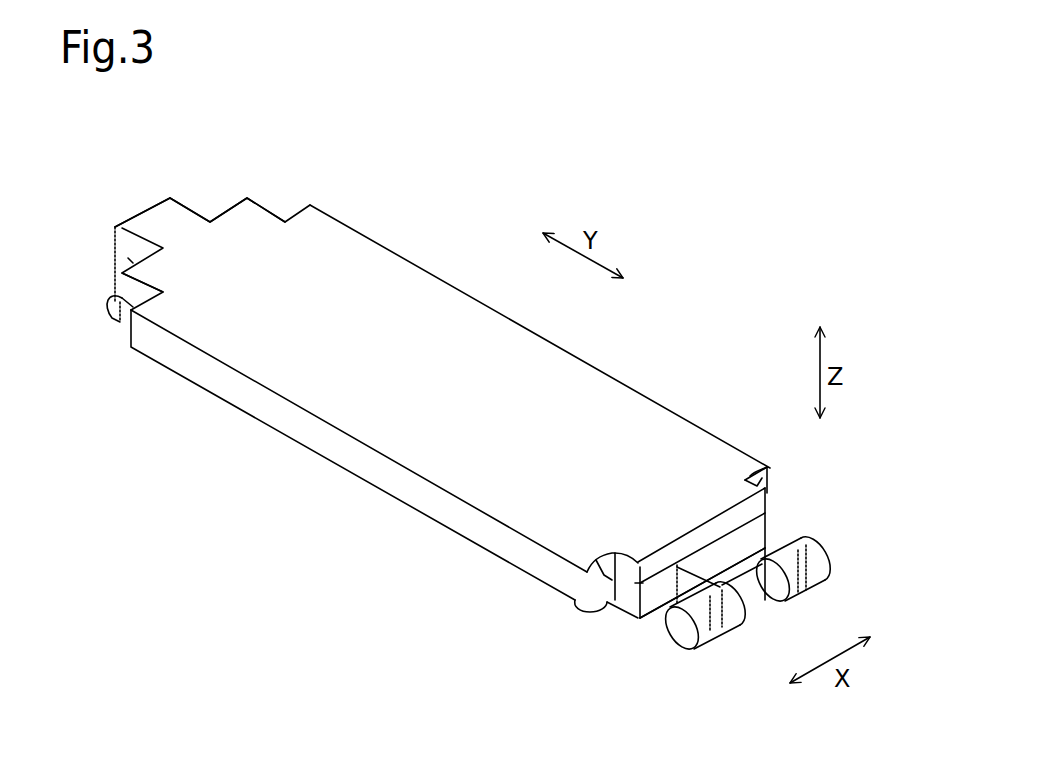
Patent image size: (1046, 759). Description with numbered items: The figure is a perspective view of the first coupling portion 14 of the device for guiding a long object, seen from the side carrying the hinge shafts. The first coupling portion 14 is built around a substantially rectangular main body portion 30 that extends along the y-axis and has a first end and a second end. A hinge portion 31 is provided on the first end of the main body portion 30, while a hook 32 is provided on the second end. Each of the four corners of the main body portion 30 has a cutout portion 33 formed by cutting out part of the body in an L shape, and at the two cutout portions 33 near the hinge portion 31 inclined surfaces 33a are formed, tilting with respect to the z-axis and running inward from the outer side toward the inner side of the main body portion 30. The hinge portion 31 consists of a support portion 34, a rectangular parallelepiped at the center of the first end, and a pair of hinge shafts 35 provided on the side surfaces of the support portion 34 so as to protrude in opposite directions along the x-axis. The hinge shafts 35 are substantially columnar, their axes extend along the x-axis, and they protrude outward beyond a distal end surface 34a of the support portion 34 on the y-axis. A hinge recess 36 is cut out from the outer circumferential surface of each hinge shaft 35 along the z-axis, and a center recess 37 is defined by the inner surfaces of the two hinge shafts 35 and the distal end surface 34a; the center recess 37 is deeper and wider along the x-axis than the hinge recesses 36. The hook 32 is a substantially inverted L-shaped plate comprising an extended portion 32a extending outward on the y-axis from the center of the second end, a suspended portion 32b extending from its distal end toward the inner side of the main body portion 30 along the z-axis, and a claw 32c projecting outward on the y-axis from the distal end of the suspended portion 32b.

The first coupling portion 14 is at (407, 230).
The main body portion 30 is at (553, 360).
The hinge portion 31 is at (823, 530).
The hook 32 is at (208, 218).
The extended portion 32a is at (158, 213).
The suspended portion 32b is at (113, 250).
The claw 32c is at (108, 297).
The cutout portion 33 is at (277, 218).
The inclined surface 33a is at (758, 483).
The support portion 34 is at (720, 555).
The distal end surface 34a is at (745, 608).
The hinge shaft 35 is at (823, 548).
The hinge recess 36 is at (803, 568).
The center recess 37 is at (758, 602).